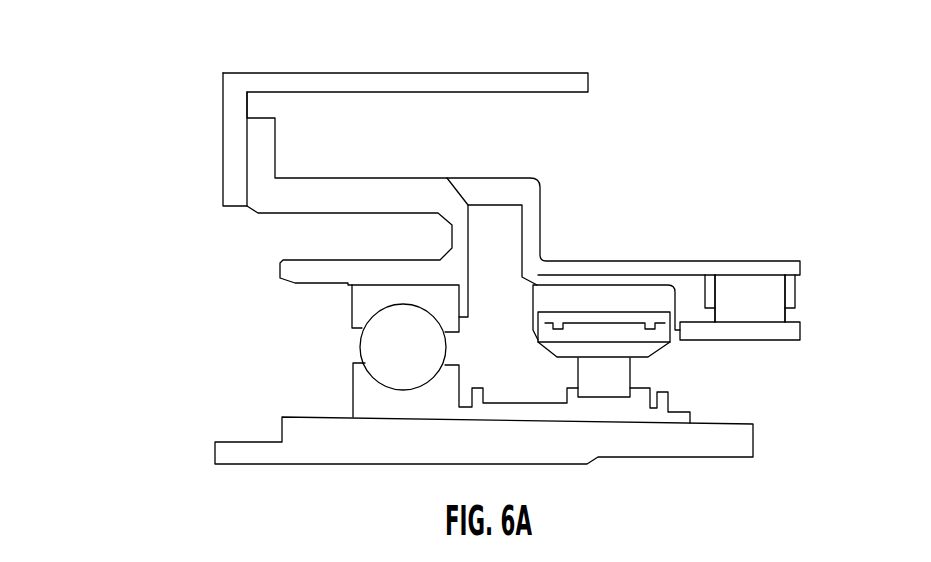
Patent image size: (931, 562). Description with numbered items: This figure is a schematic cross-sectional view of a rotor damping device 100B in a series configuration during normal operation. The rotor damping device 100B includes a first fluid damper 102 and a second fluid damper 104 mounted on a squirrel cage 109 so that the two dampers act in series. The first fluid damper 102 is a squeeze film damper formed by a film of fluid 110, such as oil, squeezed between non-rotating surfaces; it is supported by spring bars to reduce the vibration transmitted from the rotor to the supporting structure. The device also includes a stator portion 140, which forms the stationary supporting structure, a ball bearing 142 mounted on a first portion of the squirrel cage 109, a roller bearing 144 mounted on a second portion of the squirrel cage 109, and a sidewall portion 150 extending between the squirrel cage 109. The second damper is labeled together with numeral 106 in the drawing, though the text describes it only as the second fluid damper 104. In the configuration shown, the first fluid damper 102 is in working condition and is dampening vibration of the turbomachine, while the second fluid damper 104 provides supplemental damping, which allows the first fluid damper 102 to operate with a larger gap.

The rotor damping device 100B is at (150, 98).
The stator portion 140 is at (393, 73).
The squirrel cage 109 is at (484, 178).
The film of fluid 110 is at (617, 312).
The first fluid damper 102 is at (535, 335).
The sidewall portion 150 is at (795, 297).
The second fluid damper 104 is at (750, 298).
The component 106 is at (750, 298).
The ball bearing 142 is at (360, 345).
The roller bearing 144 is at (578, 365).